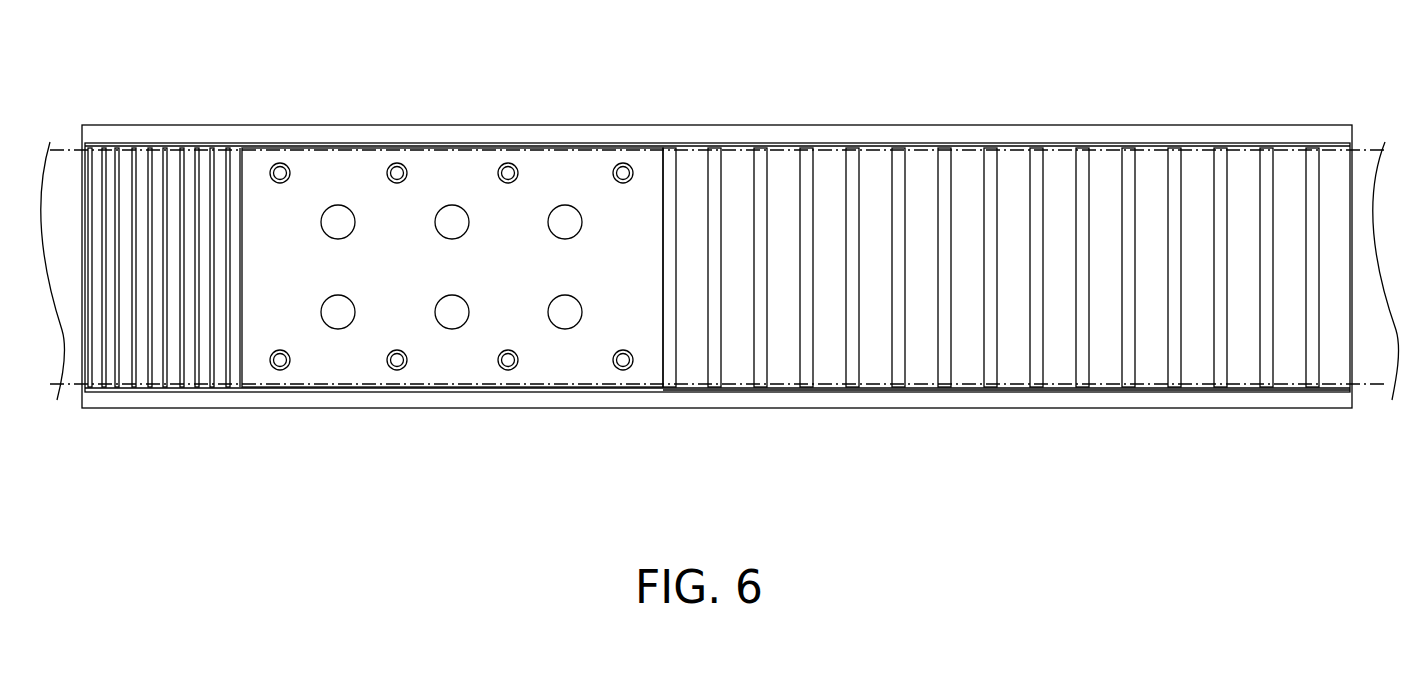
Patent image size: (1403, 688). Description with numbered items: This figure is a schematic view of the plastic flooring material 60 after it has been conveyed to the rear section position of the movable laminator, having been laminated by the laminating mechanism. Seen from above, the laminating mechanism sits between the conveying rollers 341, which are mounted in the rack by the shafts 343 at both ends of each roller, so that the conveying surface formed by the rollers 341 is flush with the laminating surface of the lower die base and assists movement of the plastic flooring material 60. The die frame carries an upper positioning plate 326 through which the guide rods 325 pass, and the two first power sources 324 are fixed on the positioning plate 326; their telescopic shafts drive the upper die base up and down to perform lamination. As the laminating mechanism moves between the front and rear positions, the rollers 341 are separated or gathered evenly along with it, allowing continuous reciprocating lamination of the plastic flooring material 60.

The plastic flooring material 60 is at (1364, 372).
The first power source 324 is at (336, 220).
The guide rod 325 is at (620, 172).
The upper positioning plate 326 is at (452, 176).
The roller 341 is at (855, 365).
The shaft 343 is at (810, 387).